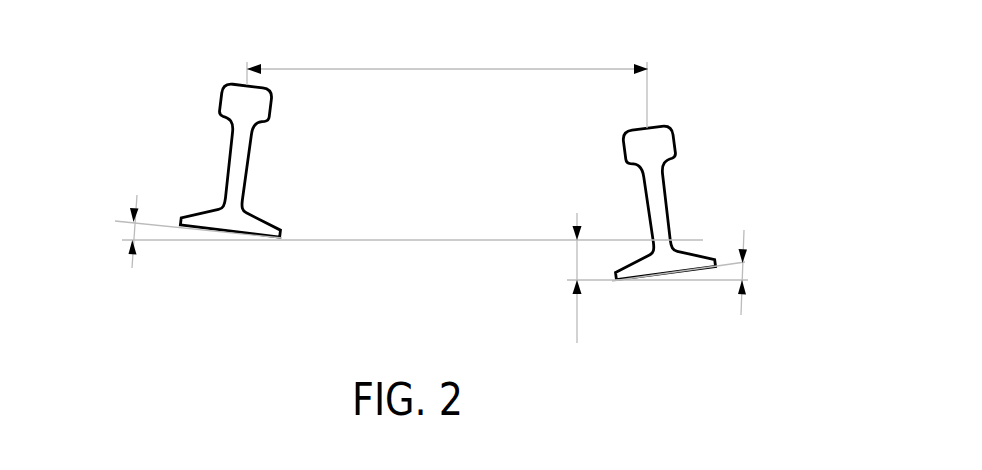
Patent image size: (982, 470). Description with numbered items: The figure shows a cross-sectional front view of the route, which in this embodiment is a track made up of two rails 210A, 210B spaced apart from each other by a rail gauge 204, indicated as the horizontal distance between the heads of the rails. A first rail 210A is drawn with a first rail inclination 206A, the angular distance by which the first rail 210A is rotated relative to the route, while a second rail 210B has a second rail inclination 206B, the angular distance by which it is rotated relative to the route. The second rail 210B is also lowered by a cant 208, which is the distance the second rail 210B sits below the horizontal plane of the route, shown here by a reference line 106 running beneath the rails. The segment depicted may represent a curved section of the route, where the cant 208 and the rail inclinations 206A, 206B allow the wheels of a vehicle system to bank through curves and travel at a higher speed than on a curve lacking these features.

The track surface / rail base reference line 106 is at (388, 241).
The rail gauge 204 is at (447, 69).
The first rail inclination 206A is at (130, 222).
The second rail inclination 206B is at (743, 268).
The cant 208 is at (577, 317).
The first rail 210A is at (228, 83).
The second rail 210B is at (657, 127).